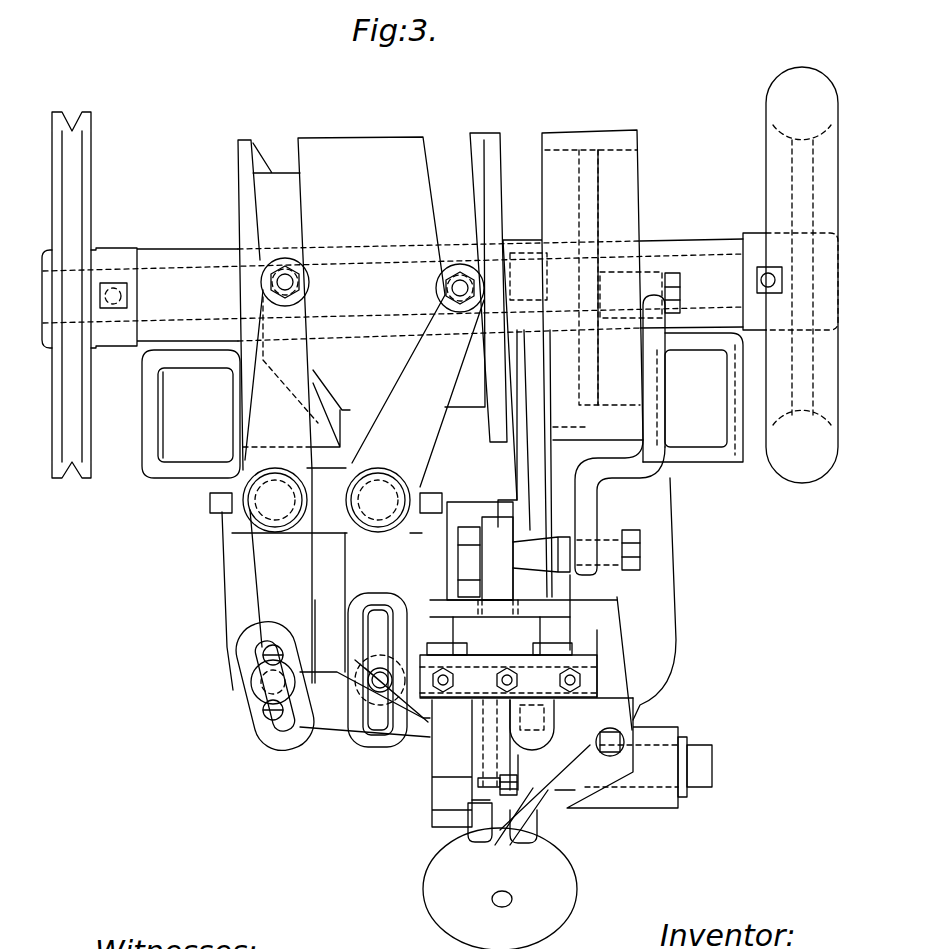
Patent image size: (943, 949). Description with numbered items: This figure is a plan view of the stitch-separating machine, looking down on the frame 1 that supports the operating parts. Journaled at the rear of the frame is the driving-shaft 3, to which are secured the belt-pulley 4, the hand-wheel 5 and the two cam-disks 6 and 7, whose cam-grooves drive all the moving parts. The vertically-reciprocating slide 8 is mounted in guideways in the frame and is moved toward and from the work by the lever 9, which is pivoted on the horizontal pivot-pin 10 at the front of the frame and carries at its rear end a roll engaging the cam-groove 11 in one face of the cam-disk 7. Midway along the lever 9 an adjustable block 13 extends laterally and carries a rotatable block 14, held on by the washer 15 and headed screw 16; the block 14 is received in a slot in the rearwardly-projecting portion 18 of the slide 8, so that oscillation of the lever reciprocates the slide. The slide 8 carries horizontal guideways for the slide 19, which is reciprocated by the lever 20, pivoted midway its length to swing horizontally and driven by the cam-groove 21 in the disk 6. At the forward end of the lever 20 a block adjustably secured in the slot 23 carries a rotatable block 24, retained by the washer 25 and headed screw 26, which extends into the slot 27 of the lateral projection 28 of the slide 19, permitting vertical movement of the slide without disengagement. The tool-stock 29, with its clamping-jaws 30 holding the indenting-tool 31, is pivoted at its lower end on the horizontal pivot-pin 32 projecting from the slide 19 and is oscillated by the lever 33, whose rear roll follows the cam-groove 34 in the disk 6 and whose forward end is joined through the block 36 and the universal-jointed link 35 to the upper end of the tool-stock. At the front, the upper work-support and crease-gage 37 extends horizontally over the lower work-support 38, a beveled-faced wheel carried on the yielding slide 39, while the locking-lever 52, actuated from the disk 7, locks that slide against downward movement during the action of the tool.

The frame 1 is at (668, 567).
The driving-shaft 3 is at (177, 275).
The belt-pulley 4 is at (85, 147).
The hand-wheel 5 is at (795, 85).
The cam-disk 6 is at (362, 143).
The cam-disk 7 is at (557, 133).
The vertically-reciprocating slide 8 is at (526, 675).
The lever 9 is at (665, 485).
The horizontal pivot-pin 10 is at (700, 755).
The cam-groove 11 is at (627, 178).
The block 13 is at (603, 537).
The block 14 is at (497, 540).
The washer 15 is at (478, 540).
The headed screw 16 is at (478, 545).
The rearwardly-projecting portion 18 is at (497, 558).
The slide 19 is at (405, 745).
The lever 20 is at (418, 313).
The cam-groove 21 is at (471, 280).
The slot 23 is at (380, 610).
The block 24 is at (378, 670).
The washer 25 is at (368, 658).
The headed screw 26 is at (368, 672).
The slot 27 is at (365, 615).
The lateral projection 28 is at (352, 600).
The tool-stock 29 is at (510, 750).
The clamping-jaws 30 is at (555, 790).
The indenting-tool 31 is at (502, 842).
The horizontal pivot-pin 32 is at (478, 783).
The lever 33 is at (292, 490).
The cam-groove 34 is at (272, 185).
The link 35 is at (365, 704).
The block 36 is at (250, 690).
The upper work-support and crease-gage 37 is at (545, 838).
The lower work-support 38 is at (580, 882).
The slide 39 is at (465, 810).
The locking-lever 52 is at (525, 452).